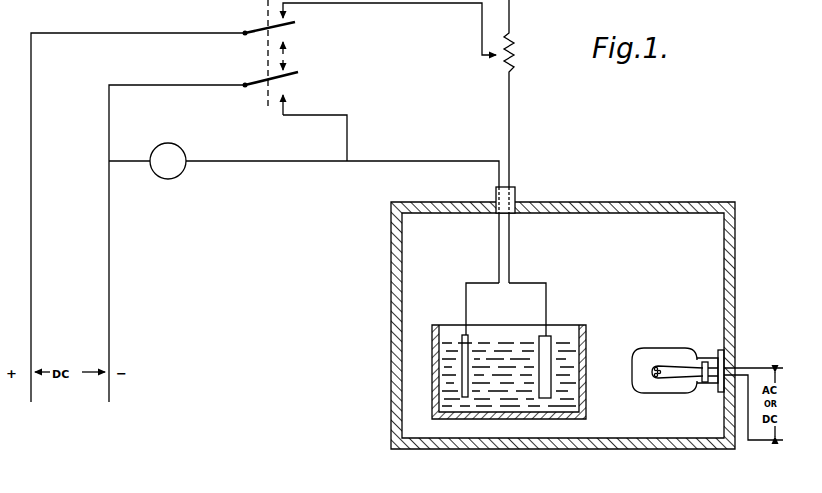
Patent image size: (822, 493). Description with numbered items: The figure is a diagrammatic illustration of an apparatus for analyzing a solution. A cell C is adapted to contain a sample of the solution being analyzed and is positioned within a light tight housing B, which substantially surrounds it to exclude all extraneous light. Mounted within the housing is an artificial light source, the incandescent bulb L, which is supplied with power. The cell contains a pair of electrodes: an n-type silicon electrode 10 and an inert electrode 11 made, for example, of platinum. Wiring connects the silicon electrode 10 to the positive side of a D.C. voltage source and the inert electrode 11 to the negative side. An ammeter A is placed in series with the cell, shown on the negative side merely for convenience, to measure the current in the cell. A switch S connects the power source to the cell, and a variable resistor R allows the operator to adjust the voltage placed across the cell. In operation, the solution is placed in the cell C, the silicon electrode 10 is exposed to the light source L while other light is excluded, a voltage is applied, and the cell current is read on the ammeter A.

The switch S is at (286, 57).
The variable resistor R is at (518, 141).
The ammeter A is at (304, 213).
The light tight housing B is at (641, 201).
The cell C is at (589, 403).
The incandescent bulb L is at (683, 349).
The n-type silicon electrode 10 is at (549, 340).
The inert electrode 11 is at (462, 335).